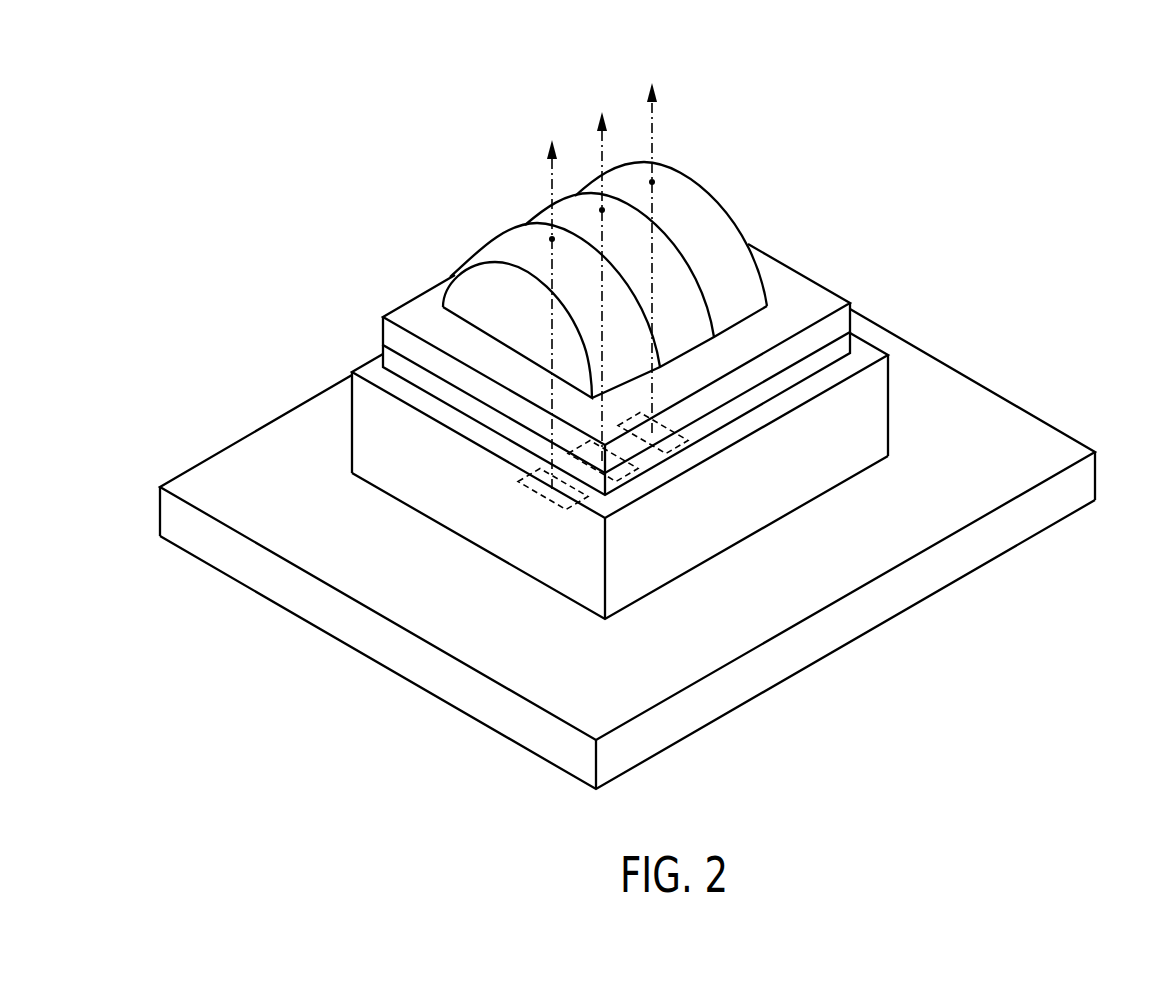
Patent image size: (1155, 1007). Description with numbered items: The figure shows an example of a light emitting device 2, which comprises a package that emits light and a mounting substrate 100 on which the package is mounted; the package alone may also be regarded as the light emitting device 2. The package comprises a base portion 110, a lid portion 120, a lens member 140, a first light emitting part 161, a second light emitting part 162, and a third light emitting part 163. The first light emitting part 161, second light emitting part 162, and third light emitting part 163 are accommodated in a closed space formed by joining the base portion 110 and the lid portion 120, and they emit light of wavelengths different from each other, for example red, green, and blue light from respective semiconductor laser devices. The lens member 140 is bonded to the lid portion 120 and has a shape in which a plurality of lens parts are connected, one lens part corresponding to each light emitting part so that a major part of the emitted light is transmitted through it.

The light emitting device 2 is at (1082, 380).
The mounting substrate 100 is at (487, 716).
The base portion 110 is at (360, 408).
The lid portion 120 is at (391, 357).
The lens member 140 is at (397, 336).
The first light emitting part 161 is at (553, 505).
The second light emitting part 162 is at (632, 483).
The third light emitting part 163 is at (686, 455).